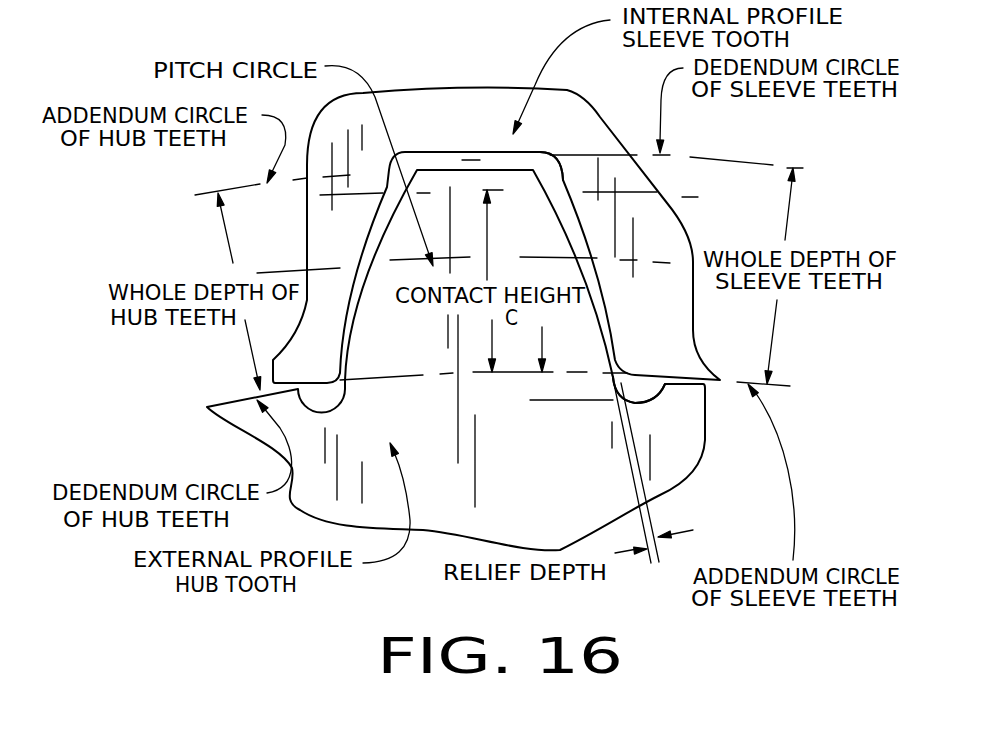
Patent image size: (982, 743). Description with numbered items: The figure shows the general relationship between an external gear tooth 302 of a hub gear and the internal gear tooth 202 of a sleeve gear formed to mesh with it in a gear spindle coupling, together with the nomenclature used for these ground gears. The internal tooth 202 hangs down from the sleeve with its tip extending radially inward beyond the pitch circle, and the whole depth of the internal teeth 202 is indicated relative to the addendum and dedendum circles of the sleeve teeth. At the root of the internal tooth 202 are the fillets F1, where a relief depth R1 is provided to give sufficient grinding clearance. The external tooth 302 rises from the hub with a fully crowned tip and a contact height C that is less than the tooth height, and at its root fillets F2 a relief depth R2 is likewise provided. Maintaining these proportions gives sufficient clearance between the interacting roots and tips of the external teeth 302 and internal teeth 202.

The internal gear tooth 202 is at (470, 160).
The external gear tooth 302 is at (550, 499).
The fillet of internal gear tooth F1 is at (540, 150).
The fillet of external gear tooth F2 is at (642, 391).
The relief depth of internal gear teeth R1 is at (697, 110).
The relief depth of external gear teeth R2 is at (548, 447).